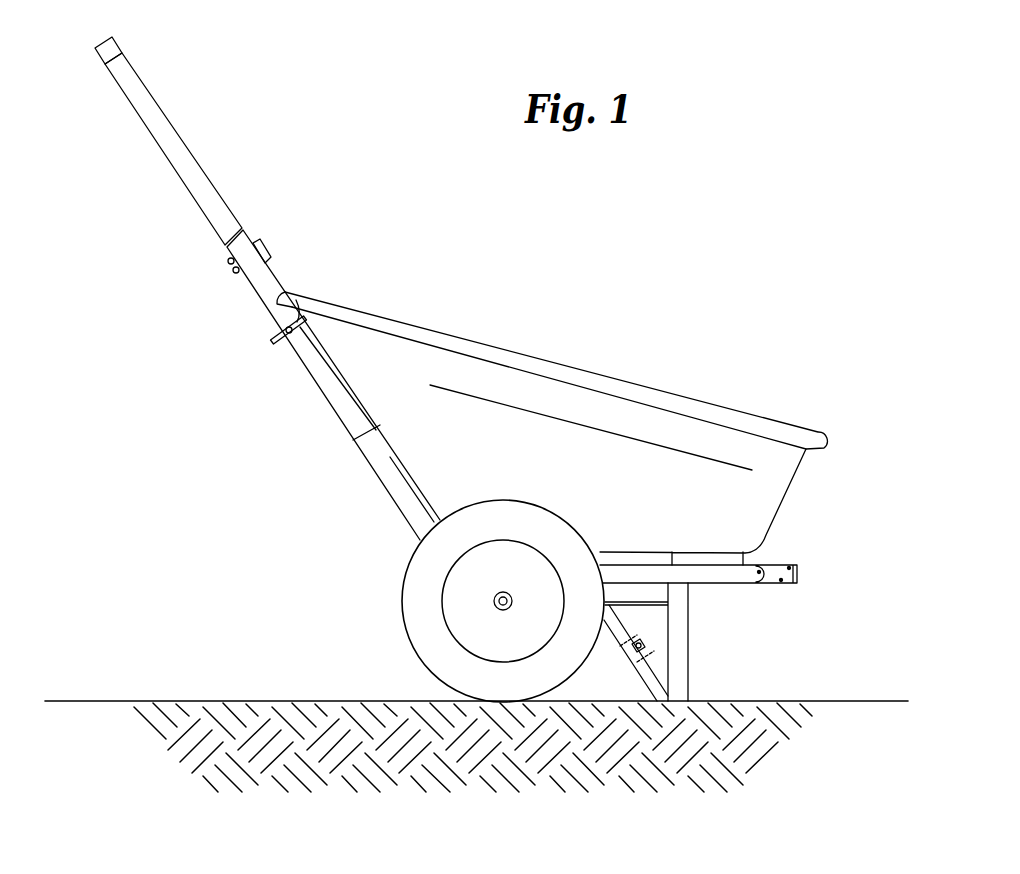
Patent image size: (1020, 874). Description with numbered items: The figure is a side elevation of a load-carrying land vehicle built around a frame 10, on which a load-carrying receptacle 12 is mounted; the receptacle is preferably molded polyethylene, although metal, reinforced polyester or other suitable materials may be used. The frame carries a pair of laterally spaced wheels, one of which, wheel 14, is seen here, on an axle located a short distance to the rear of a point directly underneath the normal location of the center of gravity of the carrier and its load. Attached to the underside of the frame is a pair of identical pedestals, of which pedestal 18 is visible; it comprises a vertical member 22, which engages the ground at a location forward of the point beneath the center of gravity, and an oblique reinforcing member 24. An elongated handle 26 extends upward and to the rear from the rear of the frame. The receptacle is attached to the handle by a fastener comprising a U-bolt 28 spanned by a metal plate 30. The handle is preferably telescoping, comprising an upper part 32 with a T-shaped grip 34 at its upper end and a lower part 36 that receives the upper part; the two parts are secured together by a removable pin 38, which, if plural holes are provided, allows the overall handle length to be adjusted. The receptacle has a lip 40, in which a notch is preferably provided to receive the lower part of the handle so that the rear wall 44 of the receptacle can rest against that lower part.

The frame 10 is at (790, 556).
The load-carrying receptacle 12 is at (582, 411).
The wheel 14 is at (402, 609).
The pedestal 18 is at (687, 642).
The vertical member 22 is at (688, 626).
The oblique reinforcing member 24 is at (622, 642).
The elongated handle 26 is at (263, 275).
The U-bolt 28 is at (300, 320).
The metal plate 30 is at (287, 340).
The upper part 32 is at (143, 127).
The T-shaped grip 34 is at (117, 40).
The lower part 36 is at (333, 385).
The removable pin 38 is at (268, 250).
The lip 40 is at (412, 328).
The rear wall 44 is at (357, 432).